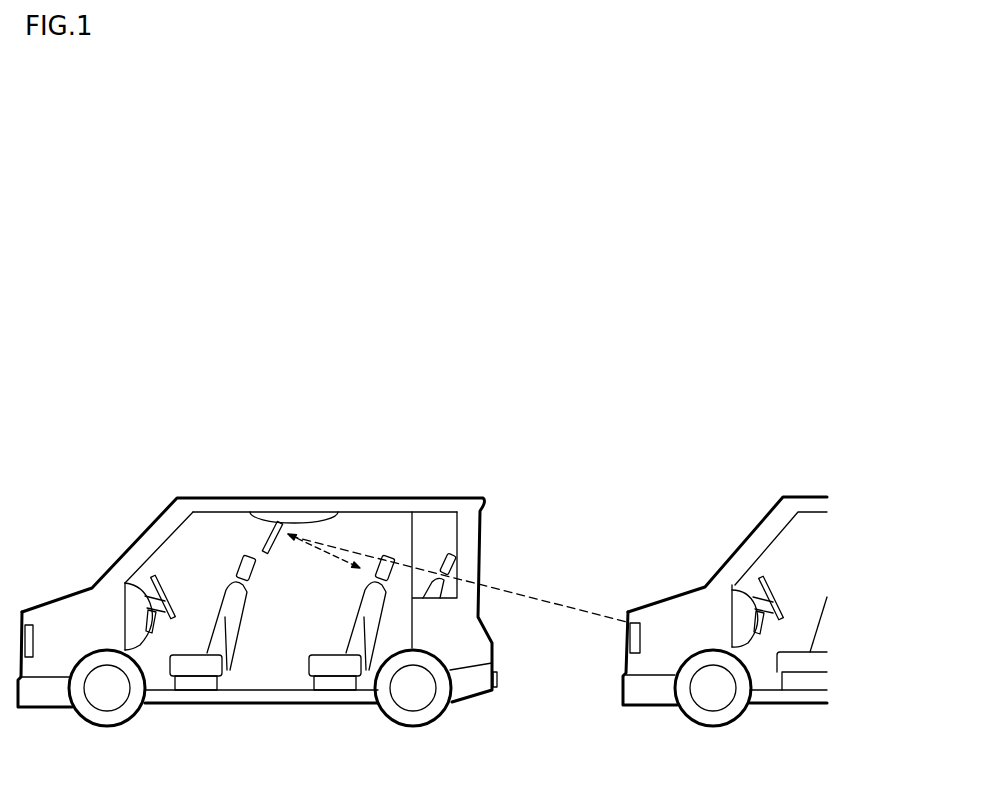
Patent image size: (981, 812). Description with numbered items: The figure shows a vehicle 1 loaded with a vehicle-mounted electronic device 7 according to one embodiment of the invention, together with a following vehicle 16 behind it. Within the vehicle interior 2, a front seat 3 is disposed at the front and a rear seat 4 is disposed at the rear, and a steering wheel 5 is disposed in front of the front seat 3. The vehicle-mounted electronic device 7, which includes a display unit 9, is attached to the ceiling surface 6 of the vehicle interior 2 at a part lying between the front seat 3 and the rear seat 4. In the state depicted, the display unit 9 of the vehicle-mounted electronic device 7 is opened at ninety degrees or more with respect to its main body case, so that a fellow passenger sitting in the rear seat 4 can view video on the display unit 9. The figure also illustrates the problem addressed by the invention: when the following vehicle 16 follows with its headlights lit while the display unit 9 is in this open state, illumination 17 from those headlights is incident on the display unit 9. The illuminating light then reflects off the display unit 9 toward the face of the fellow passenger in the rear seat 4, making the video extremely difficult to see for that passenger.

The vehicle 1 is at (65, 598).
The vehicle interior 2 is at (213, 527).
The front seat 3 is at (227, 670).
The rear seat 4 is at (368, 657).
The steering wheel 5 is at (157, 618).
The ceiling surface 6 is at (238, 513).
The vehicle-mounted electronic device 7 is at (297, 518).
The display unit 9 is at (283, 540).
The following vehicle 16 is at (797, 495).
The illumination 17 is at (545, 598).